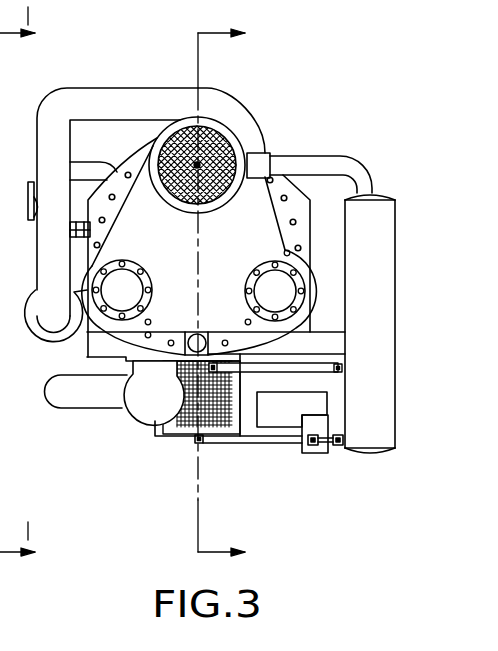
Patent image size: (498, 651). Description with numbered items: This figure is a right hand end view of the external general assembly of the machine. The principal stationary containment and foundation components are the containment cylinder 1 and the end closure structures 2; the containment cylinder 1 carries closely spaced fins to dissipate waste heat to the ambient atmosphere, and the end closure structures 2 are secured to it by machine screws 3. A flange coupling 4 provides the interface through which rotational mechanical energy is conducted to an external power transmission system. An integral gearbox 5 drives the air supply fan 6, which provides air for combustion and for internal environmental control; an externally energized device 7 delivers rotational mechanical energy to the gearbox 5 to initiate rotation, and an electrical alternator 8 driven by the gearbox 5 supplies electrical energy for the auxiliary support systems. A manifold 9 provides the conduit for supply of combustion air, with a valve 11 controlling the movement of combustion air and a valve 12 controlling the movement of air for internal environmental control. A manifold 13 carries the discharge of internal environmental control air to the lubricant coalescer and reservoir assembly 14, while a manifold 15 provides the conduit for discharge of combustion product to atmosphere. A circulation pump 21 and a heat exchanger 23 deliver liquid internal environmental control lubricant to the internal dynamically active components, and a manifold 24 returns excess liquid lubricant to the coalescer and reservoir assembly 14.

The containment cylinder 1 is at (153, 140).
The end closure structures 2 is at (140, 155).
The machine screws 3 is at (120, 170).
The flange coupling 4 is at (222, 281).
The integral gearbox 5 is at (285, 205).
The air supply fan 6 is at (241, 102).
The externally energized device 7 is at (104, 325).
The electrical alternator 8 is at (303, 225).
The manifold 9 is at (24, 315).
The valve 11 is at (30, 183).
The valve 12 is at (83, 160).
The manifold 13 is at (345, 253).
The lubricant coalescer and reservoir assembly 14 is at (375, 458).
The manifold 15 is at (127, 404).
The circulation pump 21 is at (318, 455).
The heat exchanger 23 is at (182, 437).
The manifold 24 is at (187, 388).